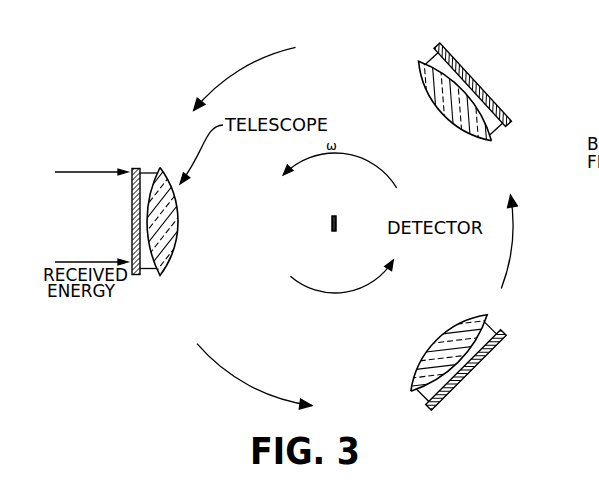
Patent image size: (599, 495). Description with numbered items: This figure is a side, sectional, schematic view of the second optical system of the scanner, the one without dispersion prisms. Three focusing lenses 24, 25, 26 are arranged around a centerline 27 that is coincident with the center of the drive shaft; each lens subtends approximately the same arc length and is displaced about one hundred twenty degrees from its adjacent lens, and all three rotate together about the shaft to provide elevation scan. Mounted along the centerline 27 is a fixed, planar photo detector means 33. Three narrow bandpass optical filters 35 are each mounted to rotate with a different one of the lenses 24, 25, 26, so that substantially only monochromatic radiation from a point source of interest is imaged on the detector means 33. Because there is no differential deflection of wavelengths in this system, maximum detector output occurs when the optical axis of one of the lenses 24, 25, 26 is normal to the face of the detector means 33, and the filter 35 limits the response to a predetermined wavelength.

The focusing lens 24 is at (158, 171).
The focusing lens 25 is at (494, 139).
The focusing lens 26 is at (488, 318).
The centerline 27 is at (338, 222).
The planar photo detector means 33 is at (338, 226).
The narrow bandpass optical filter 35 is at (132, 167).